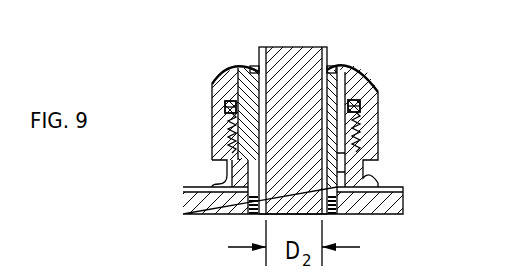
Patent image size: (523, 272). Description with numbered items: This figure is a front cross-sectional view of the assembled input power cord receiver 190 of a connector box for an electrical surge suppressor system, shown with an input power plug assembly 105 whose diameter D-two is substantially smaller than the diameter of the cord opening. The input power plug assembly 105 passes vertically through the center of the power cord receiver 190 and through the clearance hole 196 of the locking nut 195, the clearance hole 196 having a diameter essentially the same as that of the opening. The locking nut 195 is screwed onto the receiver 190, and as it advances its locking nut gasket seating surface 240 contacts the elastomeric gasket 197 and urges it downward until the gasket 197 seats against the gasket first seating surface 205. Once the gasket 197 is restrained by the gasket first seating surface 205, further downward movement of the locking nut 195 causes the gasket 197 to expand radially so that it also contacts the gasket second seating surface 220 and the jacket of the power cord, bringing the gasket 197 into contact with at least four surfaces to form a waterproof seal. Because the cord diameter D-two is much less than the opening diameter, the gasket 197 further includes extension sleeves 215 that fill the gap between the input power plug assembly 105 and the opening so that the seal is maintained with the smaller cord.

The input power plug assembly 105 is at (276, 112).
The power cord receiver 190 is at (291, 219).
The locking nut 195 is at (291, 139).
The clearance hole 196 is at (254, 55).
The gasket 197 is at (291, 86).
The gasket first seating surface 205 is at (402, 125).
The extension sleeves 215 is at (350, 111).
The gasket second seating surface 220 is at (183, 133).
The locking nut gasket seating surface 240 is at (351, 51).